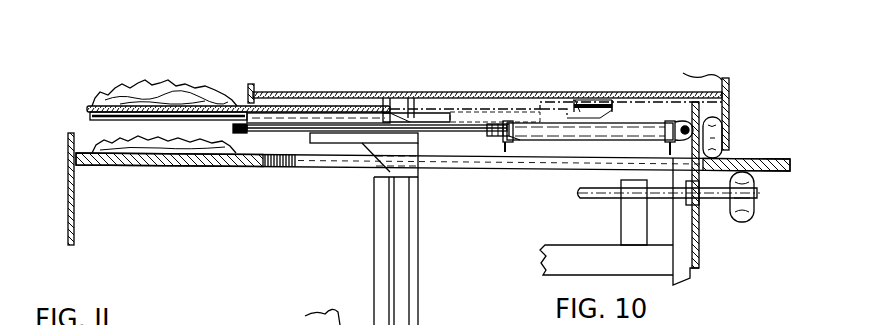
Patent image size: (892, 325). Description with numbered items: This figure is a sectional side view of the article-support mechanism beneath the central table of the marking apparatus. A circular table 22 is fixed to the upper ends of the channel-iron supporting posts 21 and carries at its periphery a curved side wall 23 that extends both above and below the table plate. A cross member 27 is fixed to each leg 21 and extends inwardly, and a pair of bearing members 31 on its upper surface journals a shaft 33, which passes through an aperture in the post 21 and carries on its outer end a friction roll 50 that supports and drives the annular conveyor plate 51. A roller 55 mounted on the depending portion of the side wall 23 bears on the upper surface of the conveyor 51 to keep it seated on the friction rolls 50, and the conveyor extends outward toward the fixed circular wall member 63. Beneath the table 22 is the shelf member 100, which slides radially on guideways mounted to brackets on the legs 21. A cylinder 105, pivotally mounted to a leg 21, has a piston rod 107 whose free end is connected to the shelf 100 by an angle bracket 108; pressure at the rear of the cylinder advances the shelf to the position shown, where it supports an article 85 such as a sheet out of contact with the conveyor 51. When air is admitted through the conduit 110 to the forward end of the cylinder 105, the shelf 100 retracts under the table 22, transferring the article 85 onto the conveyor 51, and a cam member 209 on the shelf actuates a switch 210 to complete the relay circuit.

In FIG. 10, the supporting post 21 is at (688, 228).
In FIG. 11, the supporting post 21 is at (408, 317).
In FIG. 10, the table 22 is at (372, 92).
In FIG. 11, the table 22 is at (174, 317).
In FIG. 10, the side wall 23 is at (730, 86).
In FIG. 10, the cross member 27 is at (659, 272).
In FIG. 10, the bearing member 31 is at (628, 223).
In FIG. 10, the shaft 33 is at (610, 189).
In FIG. 10, the friction roll 50 is at (745, 213).
In FIG. 10, the conveyor plate 51 is at (288, 168).
In FIG. 10, the roller 55 is at (713, 131).
In FIG. 10, the circular wall member 63 is at (68, 207).
In FIG. 10, the article 85 is at (172, 90).
In FIG. 10, the shelf member 100 is at (247, 137).
In FIG. 10, the cylinder 105 is at (592, 140).
In FIG. 10, the piston rod 107 is at (448, 133).
In FIG. 10, the angle bracket 108 is at (249, 138).
In FIG. 10, the conduit 110 is at (505, 143).
In FIG. 10, the cam member 209 is at (552, 108).
In FIG. 10, the switch 210 is at (599, 104).